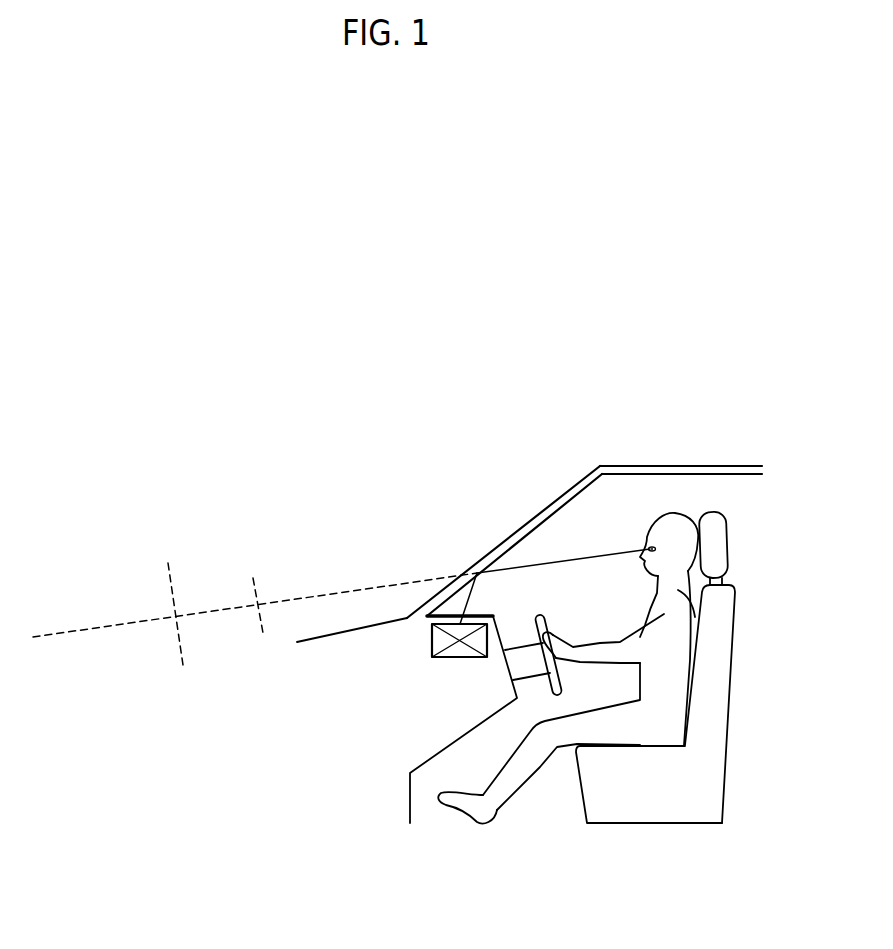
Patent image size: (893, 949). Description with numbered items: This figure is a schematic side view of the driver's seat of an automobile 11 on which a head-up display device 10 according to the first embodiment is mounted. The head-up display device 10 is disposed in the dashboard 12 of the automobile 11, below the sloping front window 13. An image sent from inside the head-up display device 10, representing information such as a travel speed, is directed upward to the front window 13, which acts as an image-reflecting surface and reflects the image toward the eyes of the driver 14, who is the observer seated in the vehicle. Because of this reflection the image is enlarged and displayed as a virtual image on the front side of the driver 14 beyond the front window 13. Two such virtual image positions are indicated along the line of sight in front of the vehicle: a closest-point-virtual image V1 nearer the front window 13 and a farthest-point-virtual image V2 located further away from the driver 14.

The head-up display device 10 is at (448, 661).
The automobile 11 is at (697, 453).
The dashboard 12 is at (480, 616).
The front window 13 is at (535, 515).
The driver 14 is at (656, 520).
The closest-point-virtual image V1 is at (255, 590).
The farthest-point-virtual image V2 is at (170, 578).